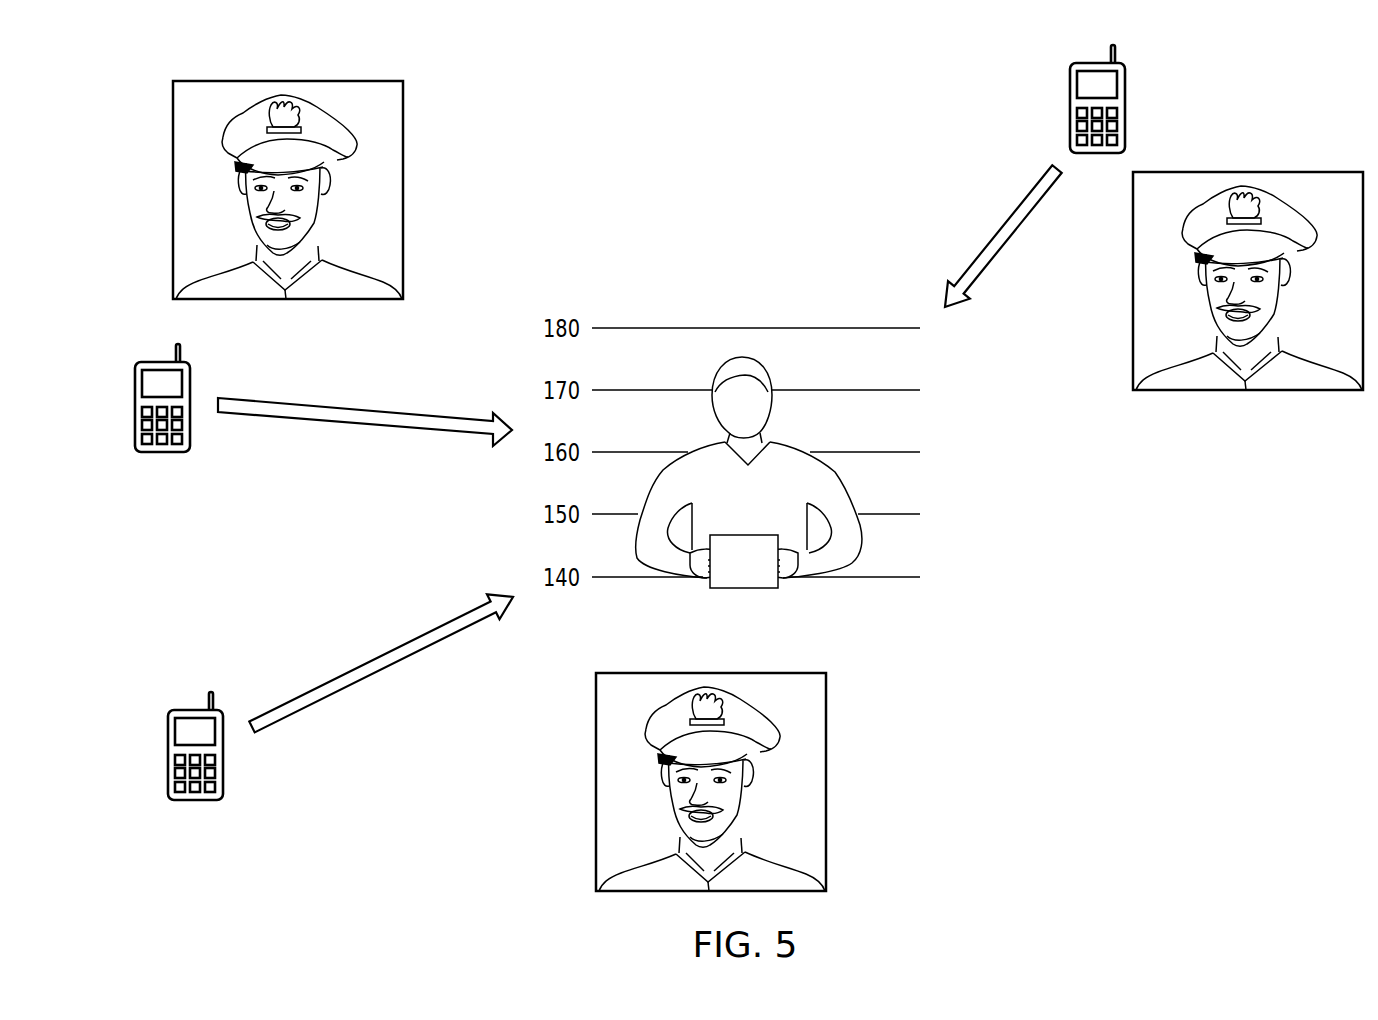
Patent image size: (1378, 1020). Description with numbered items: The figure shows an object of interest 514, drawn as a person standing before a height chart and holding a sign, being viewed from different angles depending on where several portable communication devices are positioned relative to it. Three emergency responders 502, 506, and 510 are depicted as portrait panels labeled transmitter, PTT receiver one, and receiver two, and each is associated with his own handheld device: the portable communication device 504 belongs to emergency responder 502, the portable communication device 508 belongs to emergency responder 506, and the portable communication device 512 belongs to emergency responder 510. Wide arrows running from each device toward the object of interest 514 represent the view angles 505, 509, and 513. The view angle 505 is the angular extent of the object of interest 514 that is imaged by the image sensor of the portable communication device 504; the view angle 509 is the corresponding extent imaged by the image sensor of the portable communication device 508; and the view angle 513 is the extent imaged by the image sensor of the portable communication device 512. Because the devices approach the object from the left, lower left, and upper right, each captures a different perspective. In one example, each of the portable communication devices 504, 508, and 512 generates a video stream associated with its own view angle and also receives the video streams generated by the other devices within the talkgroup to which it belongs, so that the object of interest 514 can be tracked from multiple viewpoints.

The emergency responder 502 is at (173, 190).
The portable communication device 504 is at (135, 406).
The view angle 505 is at (352, 424).
The emergency responder 506 is at (596, 778).
The portable communication device 508 is at (168, 755).
The view angle 509 is at (371, 656).
The emergency responder 510 is at (1133, 279).
The portable communication device 512 is at (1070, 108).
The view angle 513 is at (1000, 221).
The object of interest 514 is at (848, 504).